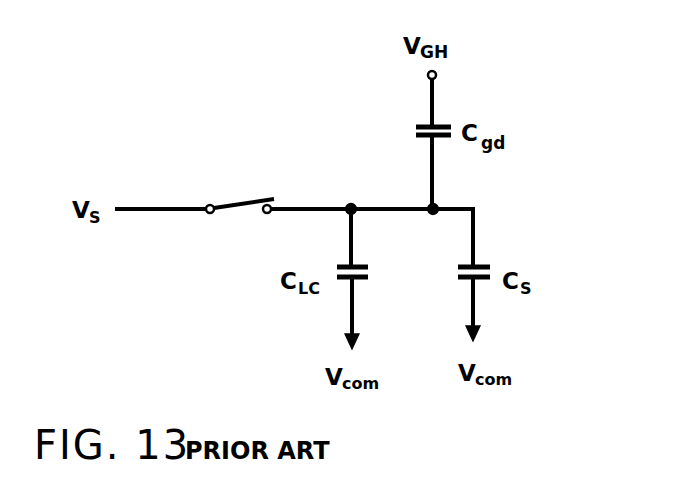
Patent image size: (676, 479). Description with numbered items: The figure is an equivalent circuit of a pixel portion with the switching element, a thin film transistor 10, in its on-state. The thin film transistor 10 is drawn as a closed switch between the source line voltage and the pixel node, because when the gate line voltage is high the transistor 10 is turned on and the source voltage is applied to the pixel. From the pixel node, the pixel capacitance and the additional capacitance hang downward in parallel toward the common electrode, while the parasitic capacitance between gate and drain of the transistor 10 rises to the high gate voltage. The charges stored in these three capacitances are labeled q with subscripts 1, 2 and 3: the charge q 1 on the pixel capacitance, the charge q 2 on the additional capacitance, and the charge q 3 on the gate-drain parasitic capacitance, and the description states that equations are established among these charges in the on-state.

The thin film transistor 10 is at (241, 200).
The charge q1 on liquid crystal capacitor CLC 1 is at (362, 243).
The charge q2 on storage capacitor CS 2 is at (463, 242).
The charge q3 on gate-drain capacitor Cgd 3 is at (452, 178).